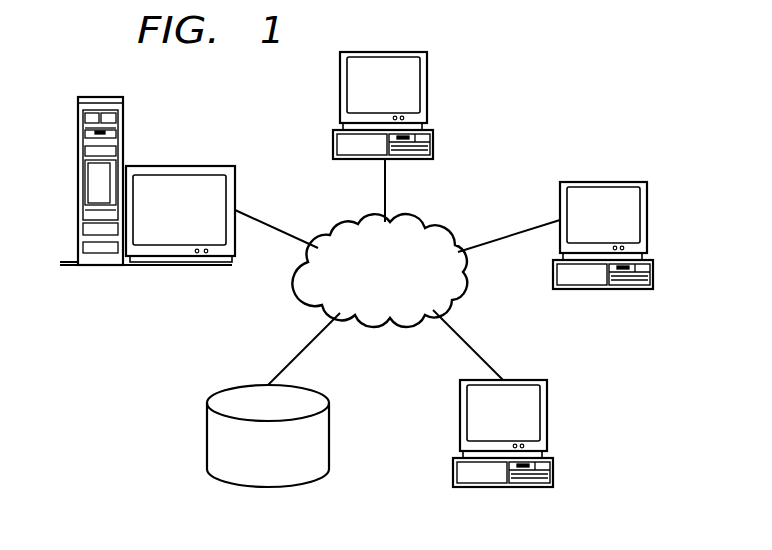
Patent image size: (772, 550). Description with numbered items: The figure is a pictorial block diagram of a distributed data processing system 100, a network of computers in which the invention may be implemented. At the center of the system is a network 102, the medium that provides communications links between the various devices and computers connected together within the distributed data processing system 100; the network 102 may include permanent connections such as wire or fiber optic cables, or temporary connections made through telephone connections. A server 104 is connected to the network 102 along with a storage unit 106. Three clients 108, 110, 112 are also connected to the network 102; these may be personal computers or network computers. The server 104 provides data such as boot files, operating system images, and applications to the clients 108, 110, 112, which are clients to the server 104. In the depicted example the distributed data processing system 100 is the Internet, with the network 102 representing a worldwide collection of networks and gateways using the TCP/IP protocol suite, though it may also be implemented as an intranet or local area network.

The distributed data processing system 100 is at (566, 79).
The network 102 is at (413, 223).
The server 104 is at (180, 165).
The storage unit 106 is at (207, 435).
The client 108 is at (427, 87).
The client 110 is at (650, 220).
The client 112 is at (548, 418).